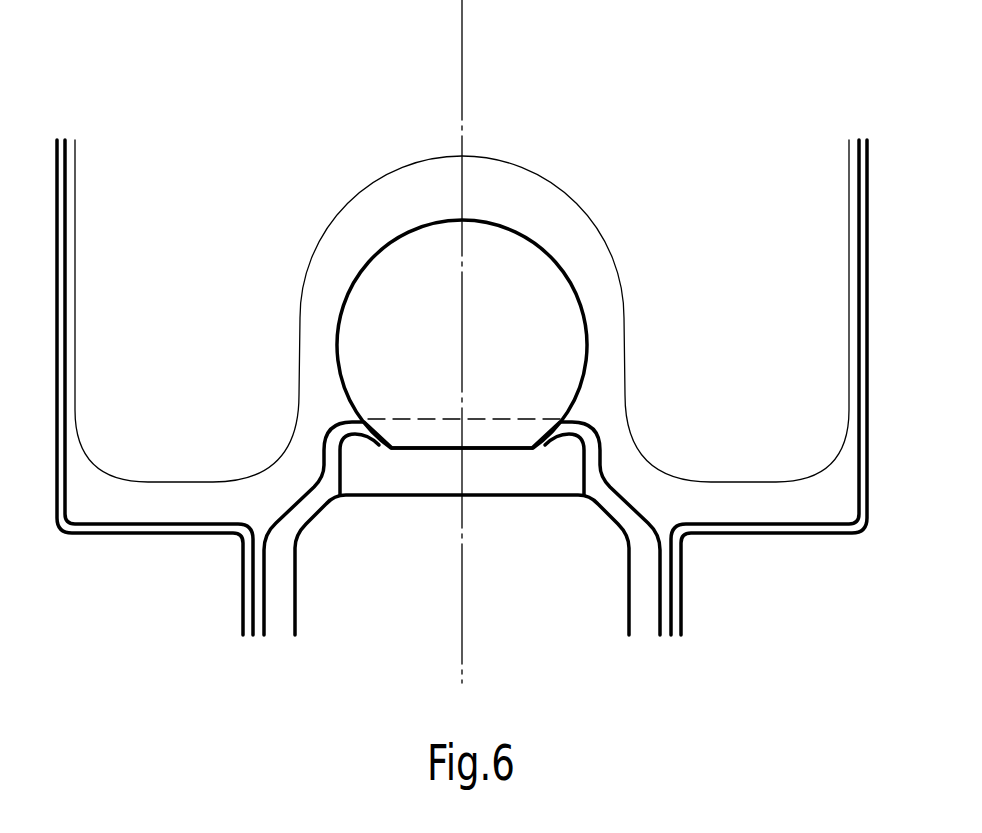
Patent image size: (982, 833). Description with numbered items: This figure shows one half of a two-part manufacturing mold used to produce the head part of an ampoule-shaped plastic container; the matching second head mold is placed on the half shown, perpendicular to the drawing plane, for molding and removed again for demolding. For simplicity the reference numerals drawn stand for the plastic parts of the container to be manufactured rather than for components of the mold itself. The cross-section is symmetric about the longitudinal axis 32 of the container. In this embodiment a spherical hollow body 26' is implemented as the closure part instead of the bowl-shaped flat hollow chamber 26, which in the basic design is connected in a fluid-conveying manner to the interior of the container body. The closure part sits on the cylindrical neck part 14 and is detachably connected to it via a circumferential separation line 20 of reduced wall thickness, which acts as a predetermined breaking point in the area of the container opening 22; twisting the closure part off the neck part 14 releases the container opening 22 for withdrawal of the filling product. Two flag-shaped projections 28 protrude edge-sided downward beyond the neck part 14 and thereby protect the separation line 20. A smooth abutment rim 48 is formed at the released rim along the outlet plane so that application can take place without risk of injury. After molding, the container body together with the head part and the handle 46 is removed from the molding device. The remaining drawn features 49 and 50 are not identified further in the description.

The neck part 14 is at (642, 598).
The separation line 20 is at (453, 450).
The container opening 22 is at (440, 418).
The hollow chamber 26 is at (462, 311).
The spherical hollow body 26' is at (525, 278).
The flag-shaped projections 28 is at (773, 443).
The longitudinal axis 32 is at (463, 647).
The handle 46 is at (805, 222).
The abutment rim 48 is at (340, 412).
The upper chamber 49 is at (612, 85).
The seat wall 50 is at (377, 444).